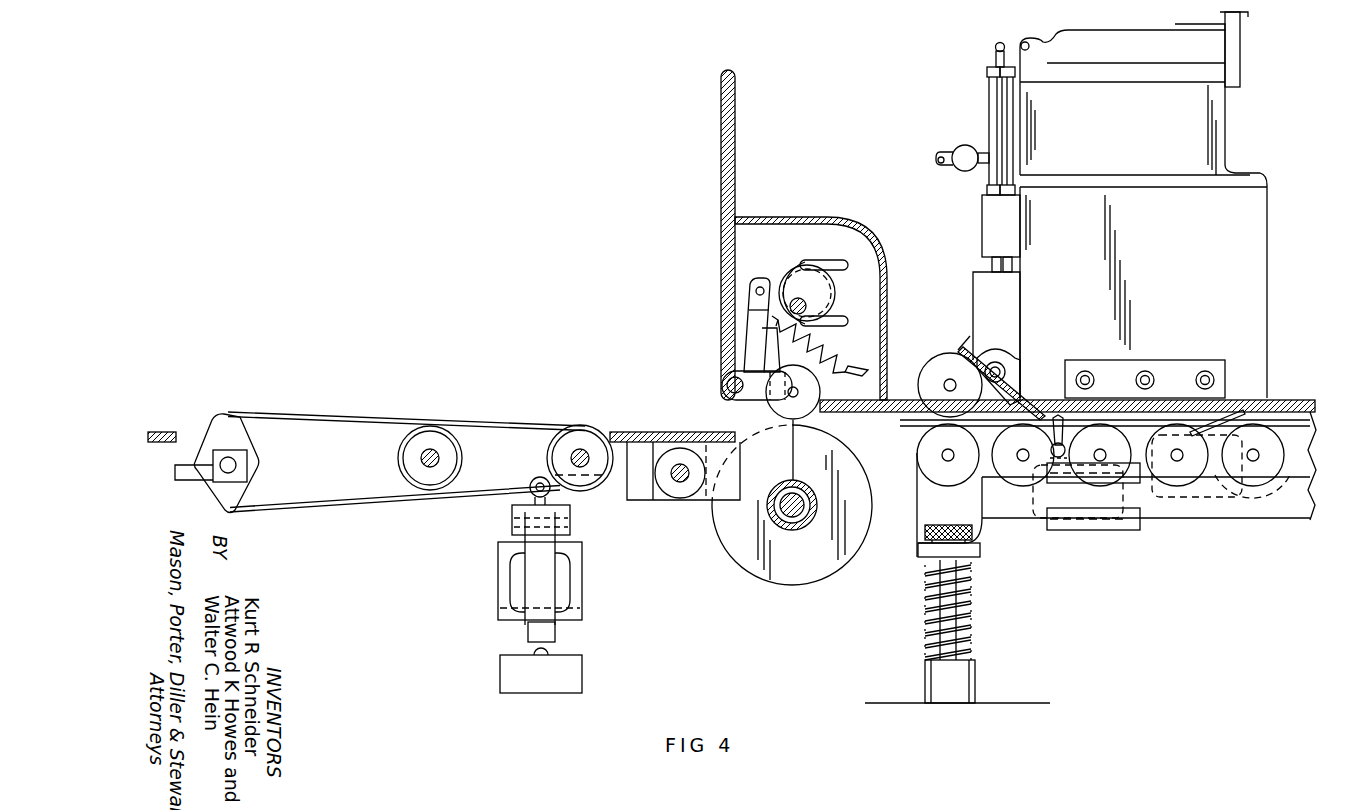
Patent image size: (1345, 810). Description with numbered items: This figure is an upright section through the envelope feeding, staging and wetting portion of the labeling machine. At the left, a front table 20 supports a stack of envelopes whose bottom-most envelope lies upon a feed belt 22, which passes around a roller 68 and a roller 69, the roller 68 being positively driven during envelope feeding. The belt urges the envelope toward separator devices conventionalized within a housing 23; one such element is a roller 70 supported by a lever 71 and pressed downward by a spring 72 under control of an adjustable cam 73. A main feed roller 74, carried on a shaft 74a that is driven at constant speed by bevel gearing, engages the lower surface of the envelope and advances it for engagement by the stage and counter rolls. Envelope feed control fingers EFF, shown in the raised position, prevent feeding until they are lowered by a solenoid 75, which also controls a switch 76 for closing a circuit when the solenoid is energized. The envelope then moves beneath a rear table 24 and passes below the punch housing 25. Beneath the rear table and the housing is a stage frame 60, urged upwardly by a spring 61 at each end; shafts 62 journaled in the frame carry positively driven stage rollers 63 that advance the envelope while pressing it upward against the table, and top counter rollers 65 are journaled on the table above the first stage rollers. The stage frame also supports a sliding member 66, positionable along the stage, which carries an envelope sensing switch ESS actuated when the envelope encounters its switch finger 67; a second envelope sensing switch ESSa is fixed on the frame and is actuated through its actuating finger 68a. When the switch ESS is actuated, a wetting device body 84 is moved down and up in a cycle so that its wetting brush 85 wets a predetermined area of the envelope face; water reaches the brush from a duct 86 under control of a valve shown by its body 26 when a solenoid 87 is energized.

The front table 20 is at (613, 432).
The feed belt 22 is at (342, 416).
The housing 23 is at (817, 217).
The rear table 24 is at (898, 400).
The housing 25 is at (1262, 252).
The valved duct 26 is at (990, 222).
The stage frame 60 is at (1205, 470).
The spring 61 is at (970, 610).
The shafts 62 is at (1023, 458).
The stage rollers 63 is at (1005, 443).
The top counter rollers 65 is at (953, 368).
The sliding member 66 is at (1125, 527).
The switch finger 67 is at (1058, 414).
The roller 68 is at (585, 487).
The actuating finger 68a is at (1224, 420).
The roller 69 is at (233, 428).
The roller 70 is at (815, 385).
The lever 71 is at (750, 324).
The spring 72 is at (822, 355).
The adjustable cam 73 is at (826, 292).
The main feed roller 74 is at (818, 570).
The shaft 74a is at (797, 500).
The solenoid 75 is at (500, 583).
The switch 76 is at (503, 678).
The wetting device body 84 is at (1015, 306).
The wetting brush 85 is at (1028, 418).
The duct 86 is at (953, 148).
The solenoid 87 is at (1212, 128).
The envelope feed control fingers EFF is at (740, 495).
The envelope sensing switch ESS is at (1040, 495).
The second envelope sensing switch ESSa is at (1208, 487).